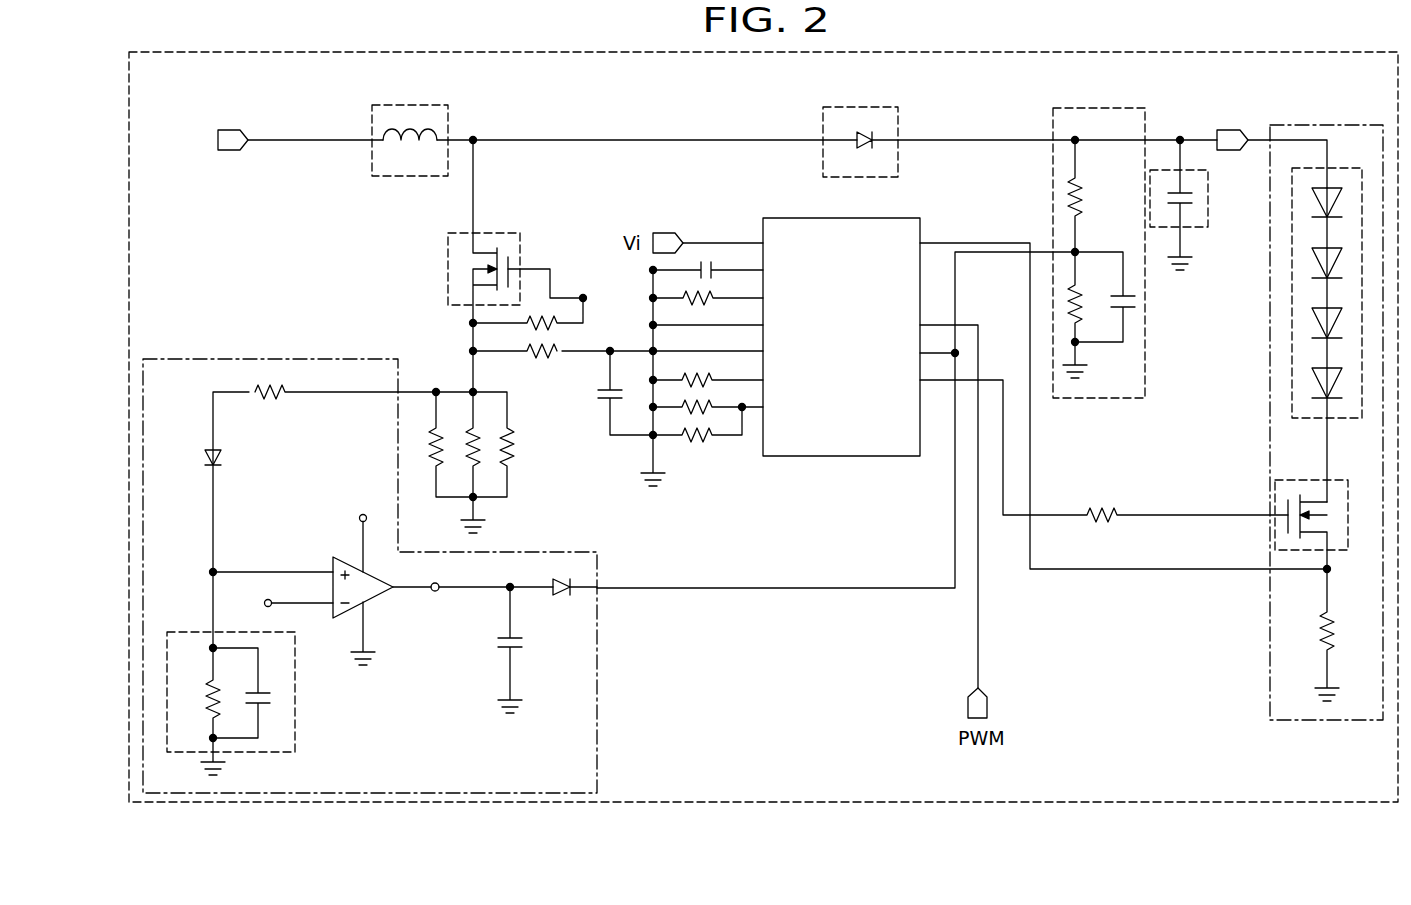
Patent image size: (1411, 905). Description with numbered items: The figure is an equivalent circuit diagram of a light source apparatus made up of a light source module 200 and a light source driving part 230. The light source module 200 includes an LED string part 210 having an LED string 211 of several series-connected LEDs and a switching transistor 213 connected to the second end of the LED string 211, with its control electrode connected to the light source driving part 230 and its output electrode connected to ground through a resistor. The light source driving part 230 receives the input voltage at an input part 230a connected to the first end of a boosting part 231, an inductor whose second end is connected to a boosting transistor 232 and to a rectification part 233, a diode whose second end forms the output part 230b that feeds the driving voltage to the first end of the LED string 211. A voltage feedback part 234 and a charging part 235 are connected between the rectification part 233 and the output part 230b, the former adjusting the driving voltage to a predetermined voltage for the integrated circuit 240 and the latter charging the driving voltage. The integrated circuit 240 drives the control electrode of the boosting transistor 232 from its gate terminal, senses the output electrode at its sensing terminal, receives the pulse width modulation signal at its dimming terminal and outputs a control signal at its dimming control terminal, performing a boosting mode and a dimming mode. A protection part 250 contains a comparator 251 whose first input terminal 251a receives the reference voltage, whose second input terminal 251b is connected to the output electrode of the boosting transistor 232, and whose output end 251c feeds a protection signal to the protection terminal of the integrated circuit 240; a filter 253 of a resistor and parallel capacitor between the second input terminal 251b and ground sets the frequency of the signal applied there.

The light source module 200 is at (1358, 125).
The LED string part 210 is at (1252, 368).
The LED string 211 is at (1292, 396).
The switching transistor 213 is at (1290, 480).
The light source driving part 230 is at (456, 52).
The input part 230a is at (228, 130).
The output part 230b is at (1228, 130).
The boosting part 231 is at (372, 163).
The boosting transistor 232 is at (448, 268).
The rectification part 233 is at (823, 163).
The voltage feedback part 234 is at (1053, 163).
The charging part 235 is at (1198, 228).
The integrated circuit 240 is at (840, 456).
The protection part 250 is at (207, 359).
The comparator 251 is at (372, 600).
The first input terminal 251a is at (303, 592).
The second input terminal 251b is at (248, 572).
The output end 251c is at (435, 592).
The filter 253 is at (295, 722).